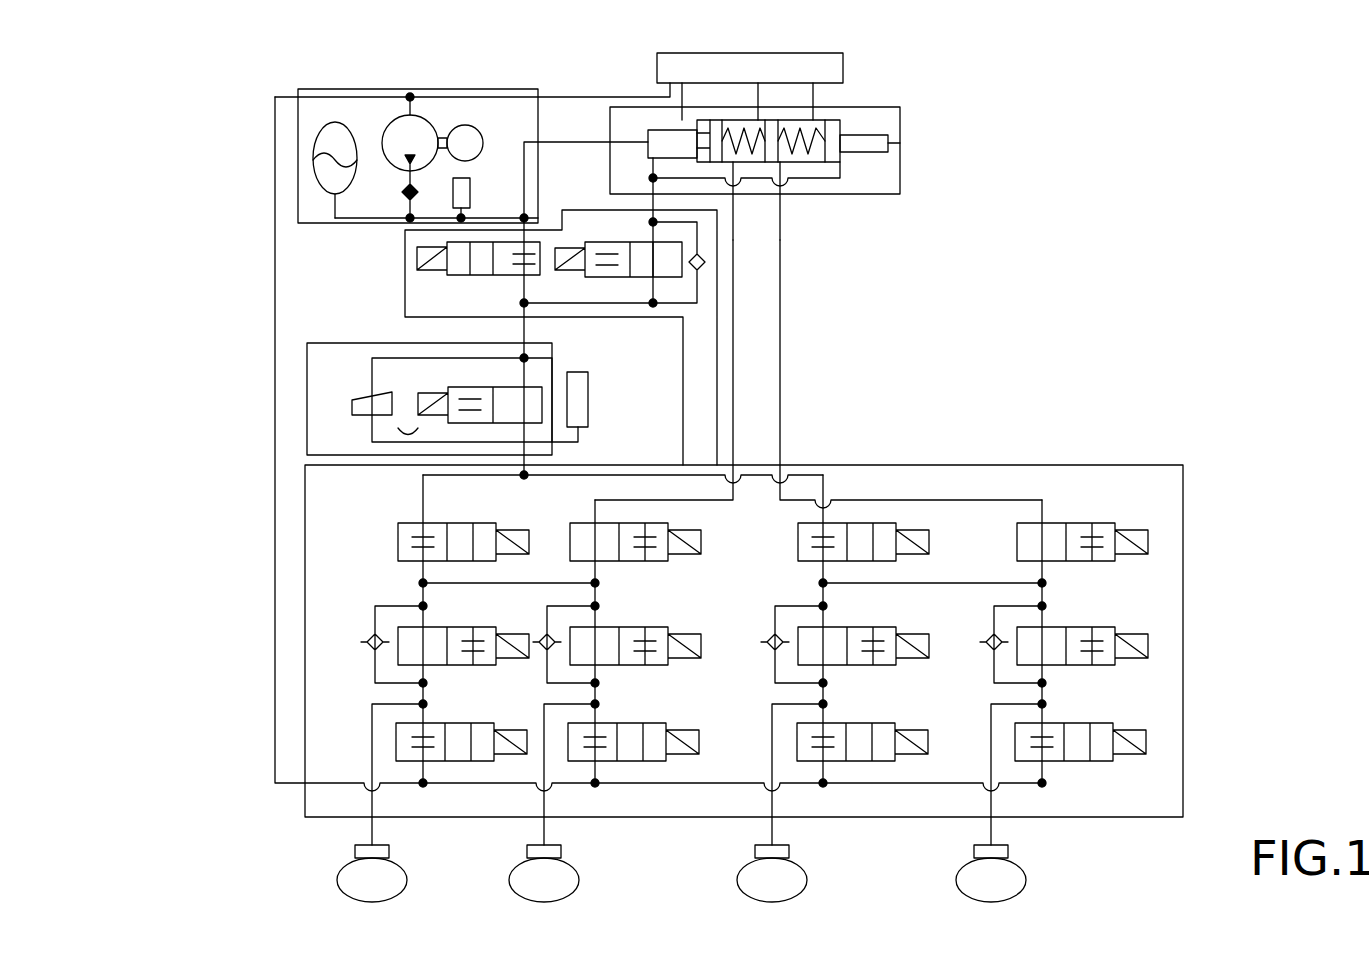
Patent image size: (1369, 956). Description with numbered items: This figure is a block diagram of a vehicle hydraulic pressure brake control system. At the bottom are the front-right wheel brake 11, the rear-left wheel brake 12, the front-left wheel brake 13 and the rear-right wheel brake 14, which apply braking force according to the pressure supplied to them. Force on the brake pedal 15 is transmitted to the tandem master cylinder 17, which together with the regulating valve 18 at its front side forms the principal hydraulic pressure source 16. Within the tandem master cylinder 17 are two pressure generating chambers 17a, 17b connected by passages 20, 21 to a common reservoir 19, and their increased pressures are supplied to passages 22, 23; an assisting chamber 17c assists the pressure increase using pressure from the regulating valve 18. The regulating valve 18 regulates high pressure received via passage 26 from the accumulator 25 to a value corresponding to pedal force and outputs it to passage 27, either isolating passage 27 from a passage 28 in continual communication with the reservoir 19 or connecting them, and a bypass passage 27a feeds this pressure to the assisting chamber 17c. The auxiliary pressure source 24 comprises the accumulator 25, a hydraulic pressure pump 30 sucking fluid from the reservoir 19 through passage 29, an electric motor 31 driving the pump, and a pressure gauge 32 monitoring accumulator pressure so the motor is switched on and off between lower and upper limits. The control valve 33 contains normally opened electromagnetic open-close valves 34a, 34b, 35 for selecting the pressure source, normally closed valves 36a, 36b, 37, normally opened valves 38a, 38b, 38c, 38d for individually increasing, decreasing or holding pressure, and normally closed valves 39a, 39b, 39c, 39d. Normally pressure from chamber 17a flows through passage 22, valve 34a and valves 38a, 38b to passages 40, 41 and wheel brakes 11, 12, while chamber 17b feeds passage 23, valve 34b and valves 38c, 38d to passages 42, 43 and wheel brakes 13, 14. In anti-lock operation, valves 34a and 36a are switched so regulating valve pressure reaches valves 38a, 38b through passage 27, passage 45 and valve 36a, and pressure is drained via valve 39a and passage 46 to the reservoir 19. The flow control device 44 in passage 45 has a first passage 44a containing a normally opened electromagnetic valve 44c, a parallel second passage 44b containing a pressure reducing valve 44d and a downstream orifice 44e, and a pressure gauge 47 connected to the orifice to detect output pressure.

The front-right wheel brake 11 is at (389, 851).
The rear-left wheel brake 12 is at (562, 851).
The front-left wheel brake 13 is at (790, 851).
The rear-right wheel brake 14 is at (1008, 851).
The brake pedal 15 is at (975, 186).
The principal hydraulic pressure source 16 is at (905, 183).
The tandem master cylinder 17 is at (850, 120).
The pressure generating chamber 17a is at (752, 153).
The pressure generating chamber 17b is at (810, 153).
The assisting chamber 17c is at (843, 158).
The regulating valve 18 is at (648, 138).
The reservoir 19 is at (845, 58).
The passage 20 is at (760, 98).
The passage 21 is at (818, 102).
The passage 22 is at (737, 290).
The passage 23 is at (782, 305).
The auxiliary pressure source 24 is at (452, 89).
The accumulator 25 is at (350, 176).
The passage 26 is at (370, 223).
The passage 27 is at (653, 160).
The bypass passage 27a is at (845, 196).
The passage 28 is at (684, 98).
The passage 29 is at (584, 97).
The hydraulic pressure pump 30 is at (392, 124).
The electric motor 31 is at (479, 130).
The pressure gauge 32 is at (471, 190).
The control valve 33 is at (1062, 465).
The normally opened electromagnetic open-close valve 34a is at (668, 562).
The normally opened electromagnetic open-close valve 34b is at (1117, 563).
The normally opened electromagnetic open-close valve 35 is at (613, 278).
The normally closed electromagnetic open-close valve 36a is at (398, 541).
The normally closed electromagnetic open-close valve 36b is at (798, 541).
The normally closed electromagnetic open-close valve 37 is at (488, 276).
The normally opened electromagnetic open-close valve 38a is at (478, 627).
The normally opened electromagnetic open-close valve 38b is at (653, 627).
The normally opened electromagnetic open-close valve 38c is at (878, 627).
The normally opened electromagnetic open-close valve 38d is at (1078, 630).
The normally closed electromagnetic open-close valve 39a is at (462, 723).
The normally closed electromagnetic open-close valve 39b is at (652, 723).
The normally closed electromagnetic open-close valve 39c is at (883, 723).
The normally closed electromagnetic open-close valve 39d is at (1085, 727).
The passage 40 is at (370, 828).
The passage 41 is at (545, 831).
The passage 42 is at (773, 831).
The passage 43 is at (990, 831).
The flow control device 44 is at (307, 386).
The first passage 44a is at (522, 374).
The second passage 44b is at (392, 344).
The normally opened electromagnetic open-close valve 44c is at (463, 387).
The pressure reducing valve 44d is at (360, 401).
The orifice 44e is at (418, 452).
The passage 45 is at (523, 341).
The passage 46 is at (270, 612).
The pressure gauge 47 is at (589, 393).